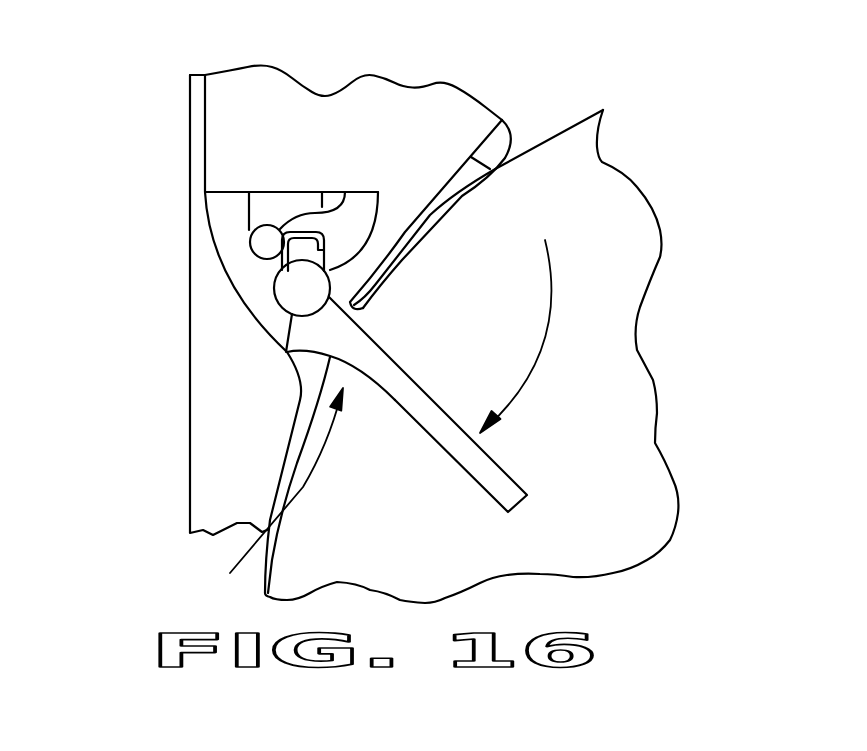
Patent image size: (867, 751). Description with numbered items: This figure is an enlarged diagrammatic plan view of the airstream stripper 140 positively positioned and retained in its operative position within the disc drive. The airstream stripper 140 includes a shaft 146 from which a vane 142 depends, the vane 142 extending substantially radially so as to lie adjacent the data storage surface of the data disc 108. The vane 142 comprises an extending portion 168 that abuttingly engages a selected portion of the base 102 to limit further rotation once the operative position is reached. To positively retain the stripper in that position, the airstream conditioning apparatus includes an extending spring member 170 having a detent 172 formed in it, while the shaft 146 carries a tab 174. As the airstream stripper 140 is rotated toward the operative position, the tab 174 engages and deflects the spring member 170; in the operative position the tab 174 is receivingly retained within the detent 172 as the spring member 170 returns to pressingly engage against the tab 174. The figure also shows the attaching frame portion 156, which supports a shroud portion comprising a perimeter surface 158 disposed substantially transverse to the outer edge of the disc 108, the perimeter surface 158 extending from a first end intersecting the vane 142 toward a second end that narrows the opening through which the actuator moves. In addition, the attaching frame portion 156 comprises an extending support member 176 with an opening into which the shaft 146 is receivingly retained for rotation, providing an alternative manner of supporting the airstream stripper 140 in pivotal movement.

The base 102 is at (218, 457).
The data disc 108 is at (627, 422).
The airstream stripper 140 is at (366, 418).
The vane 142 is at (466, 470).
The shaft 146 is at (274, 283).
The attaching frame portion 156 is at (205, 120).
The perimeter surface 158 is at (497, 168).
The extending portion 168 is at (287, 352).
The extending spring member 170 is at (268, 247).
The detent 172 is at (325, 256).
The tab 174 is at (245, 203).
The extending support member 176 is at (305, 202).